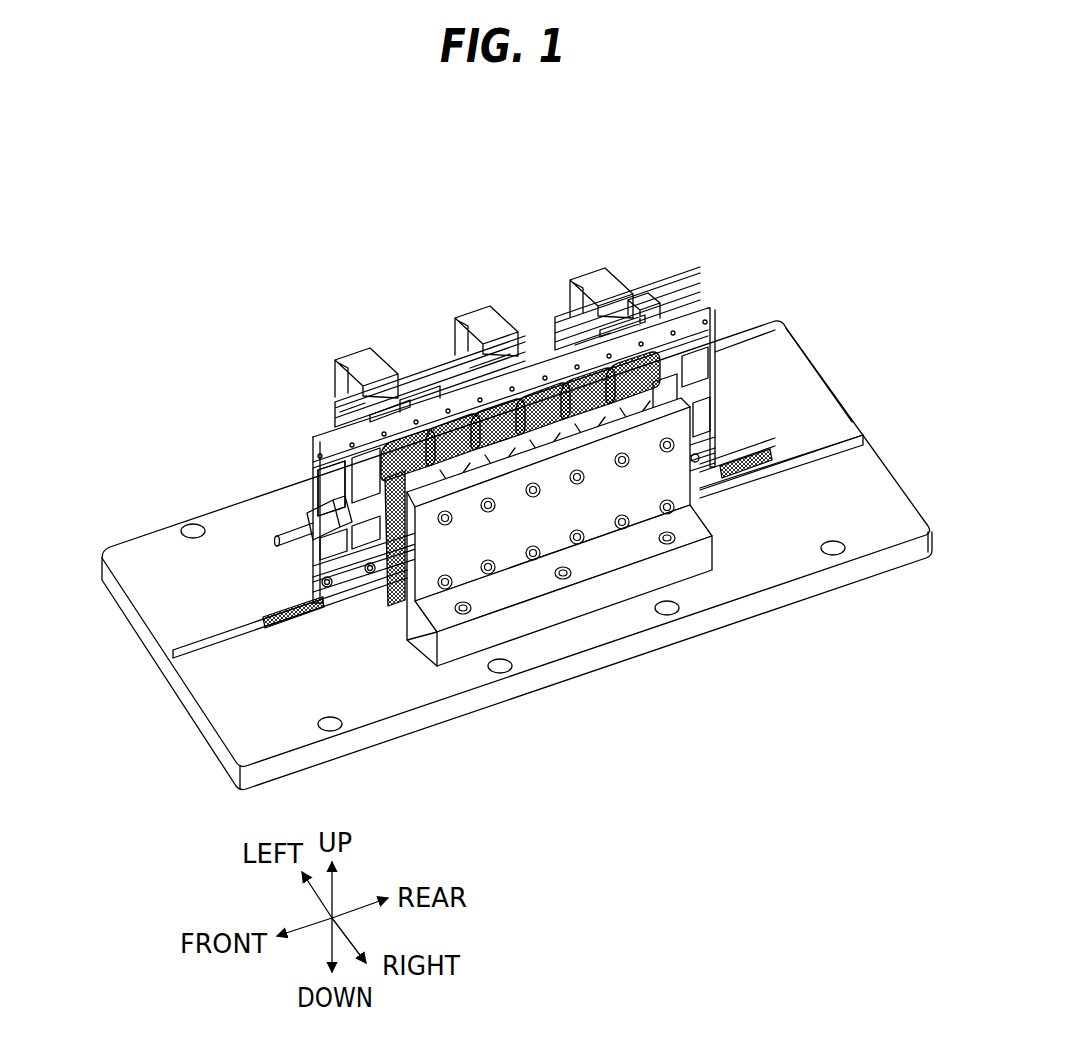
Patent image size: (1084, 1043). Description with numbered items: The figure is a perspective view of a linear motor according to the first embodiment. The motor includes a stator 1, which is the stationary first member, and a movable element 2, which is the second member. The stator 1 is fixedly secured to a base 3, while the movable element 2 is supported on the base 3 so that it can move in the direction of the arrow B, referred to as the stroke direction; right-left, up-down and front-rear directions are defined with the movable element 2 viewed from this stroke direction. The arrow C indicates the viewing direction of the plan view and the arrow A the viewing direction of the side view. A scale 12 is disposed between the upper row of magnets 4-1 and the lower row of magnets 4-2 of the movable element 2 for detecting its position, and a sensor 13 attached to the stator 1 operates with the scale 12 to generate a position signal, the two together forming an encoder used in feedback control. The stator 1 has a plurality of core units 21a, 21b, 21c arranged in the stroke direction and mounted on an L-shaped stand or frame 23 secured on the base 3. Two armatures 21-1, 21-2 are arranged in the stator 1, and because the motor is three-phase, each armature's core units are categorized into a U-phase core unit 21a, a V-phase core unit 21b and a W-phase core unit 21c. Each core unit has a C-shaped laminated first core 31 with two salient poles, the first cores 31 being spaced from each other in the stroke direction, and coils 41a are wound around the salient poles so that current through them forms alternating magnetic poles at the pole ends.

The stator 1 is at (700, 505).
The movable element 2 is at (714, 297).
The base 3 is at (810, 390).
The upper row of magnets 4-1 is at (303, 494).
The lower row of magnets 4-2 is at (304, 568).
The scale 12 is at (330, 472).
The sensor 13 is at (340, 533).
The armature 21-1 is at (475, 232).
The armature 21-2 is at (735, 192).
The U-phase core unit 21a is at (540, 345).
The V-phase core unit 21b is at (583, 373).
The W-phase core unit 21c is at (630, 337).
The L-shaped stand or frame 23 is at (637, 553).
The first core 31 is at (402, 430).
The coil 41a is at (352, 415).
The arrow A is at (605, 727).
The arrow B is at (140, 688).
The arrow C is at (538, 228).